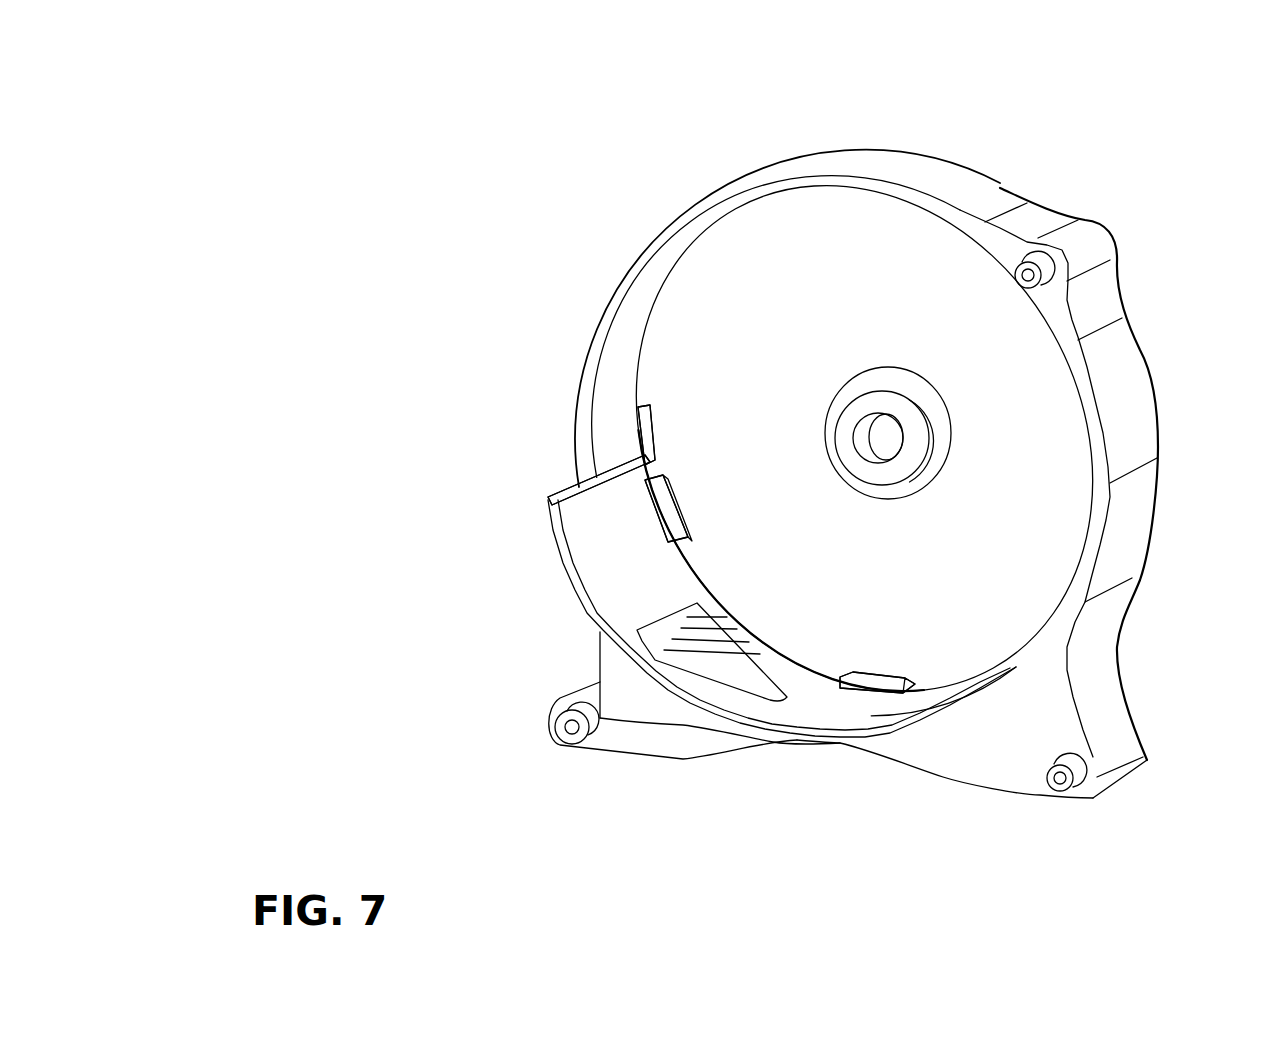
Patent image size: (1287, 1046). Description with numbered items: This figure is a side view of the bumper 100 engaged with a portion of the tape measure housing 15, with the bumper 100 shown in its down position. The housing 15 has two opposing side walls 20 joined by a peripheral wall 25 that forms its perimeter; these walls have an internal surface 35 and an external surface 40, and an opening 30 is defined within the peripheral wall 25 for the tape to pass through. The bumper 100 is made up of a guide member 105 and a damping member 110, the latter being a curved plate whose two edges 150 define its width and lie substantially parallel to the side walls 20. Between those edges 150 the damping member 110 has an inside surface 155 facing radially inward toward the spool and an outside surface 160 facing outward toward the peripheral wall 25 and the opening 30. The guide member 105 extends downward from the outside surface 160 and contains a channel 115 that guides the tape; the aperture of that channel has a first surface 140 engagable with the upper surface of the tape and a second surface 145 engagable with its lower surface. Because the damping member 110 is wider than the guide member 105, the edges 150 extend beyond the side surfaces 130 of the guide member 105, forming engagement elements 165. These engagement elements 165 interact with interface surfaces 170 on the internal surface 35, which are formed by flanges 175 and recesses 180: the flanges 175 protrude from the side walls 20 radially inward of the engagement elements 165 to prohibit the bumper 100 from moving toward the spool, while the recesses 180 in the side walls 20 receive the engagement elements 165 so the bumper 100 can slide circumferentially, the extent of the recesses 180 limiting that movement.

The housing 15 is at (990, 180).
The side walls 20 is at (879, 286).
The peripheral wall 25 is at (917, 172).
The opening 30 is at (572, 675).
The internal surface 35 is at (768, 228).
The external surface 40 is at (1110, 452).
The bumper 100 is at (532, 539).
The guide member 105 is at (625, 705).
The damping member 110 is at (580, 508).
The channel 115 is at (708, 649).
The side surfaces 130 is at (688, 720).
The first surface 140 is at (700, 604).
The second surface 145 is at (720, 682).
The edges 150 is at (665, 563).
The inside surface 155 is at (813, 687).
The outside surface 160 is at (858, 742).
The engagement elements 165 is at (668, 540).
The interface surfaces 170 is at (828, 507).
The flanges 175 is at (668, 478).
The recesses 180 is at (648, 410).